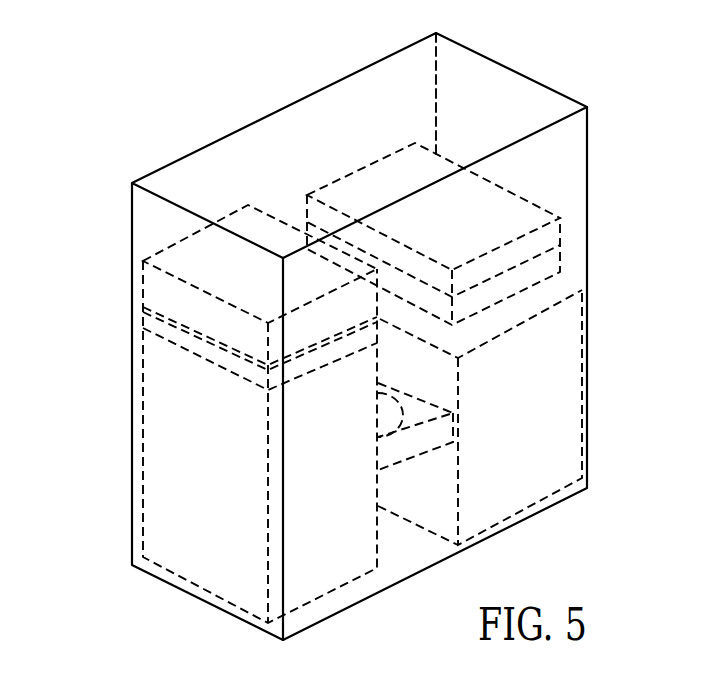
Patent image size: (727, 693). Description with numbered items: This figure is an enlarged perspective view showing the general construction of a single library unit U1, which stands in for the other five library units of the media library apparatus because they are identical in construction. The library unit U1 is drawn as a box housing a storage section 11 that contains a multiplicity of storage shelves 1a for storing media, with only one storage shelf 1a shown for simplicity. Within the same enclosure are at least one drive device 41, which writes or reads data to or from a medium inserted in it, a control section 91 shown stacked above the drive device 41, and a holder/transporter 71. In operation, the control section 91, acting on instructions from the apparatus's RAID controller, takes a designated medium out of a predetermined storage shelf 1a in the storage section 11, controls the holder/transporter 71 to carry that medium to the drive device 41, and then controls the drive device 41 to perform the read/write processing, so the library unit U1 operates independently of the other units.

The library unit U1 is at (341, 336).
The storage section 11 is at (136, 464).
The storage shelf 1a is at (152, 328).
The control section 91 is at (552, 233).
The drive device 41 is at (552, 261).
The holder/transporter 71 is at (437, 436).